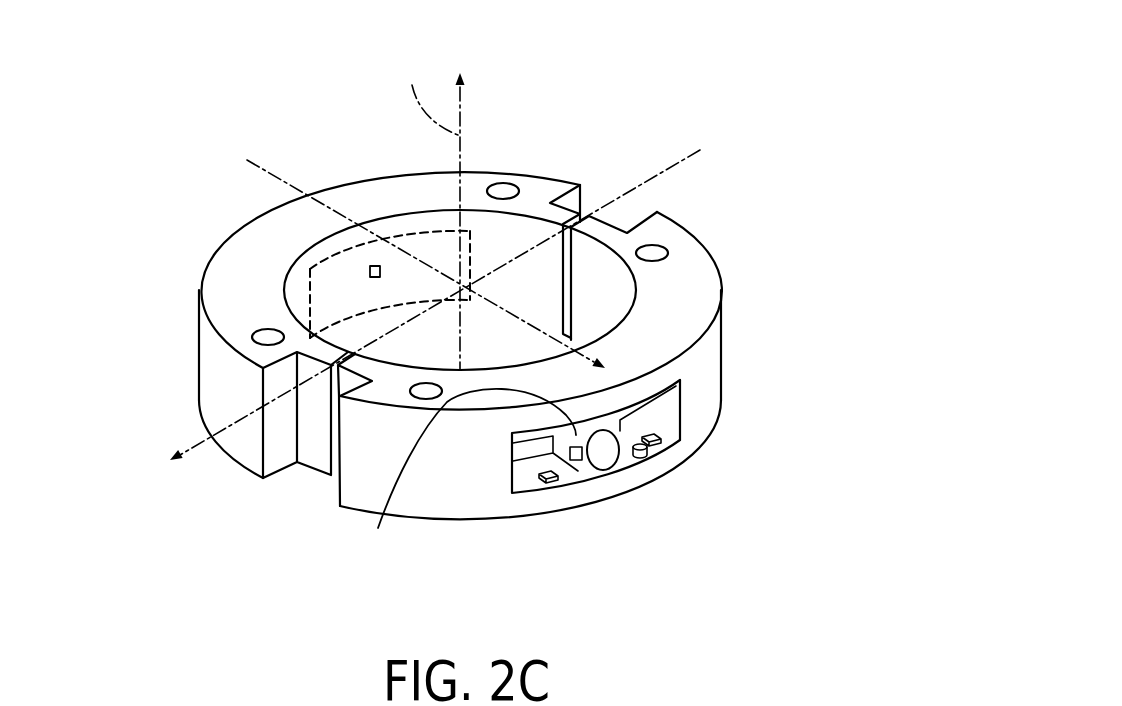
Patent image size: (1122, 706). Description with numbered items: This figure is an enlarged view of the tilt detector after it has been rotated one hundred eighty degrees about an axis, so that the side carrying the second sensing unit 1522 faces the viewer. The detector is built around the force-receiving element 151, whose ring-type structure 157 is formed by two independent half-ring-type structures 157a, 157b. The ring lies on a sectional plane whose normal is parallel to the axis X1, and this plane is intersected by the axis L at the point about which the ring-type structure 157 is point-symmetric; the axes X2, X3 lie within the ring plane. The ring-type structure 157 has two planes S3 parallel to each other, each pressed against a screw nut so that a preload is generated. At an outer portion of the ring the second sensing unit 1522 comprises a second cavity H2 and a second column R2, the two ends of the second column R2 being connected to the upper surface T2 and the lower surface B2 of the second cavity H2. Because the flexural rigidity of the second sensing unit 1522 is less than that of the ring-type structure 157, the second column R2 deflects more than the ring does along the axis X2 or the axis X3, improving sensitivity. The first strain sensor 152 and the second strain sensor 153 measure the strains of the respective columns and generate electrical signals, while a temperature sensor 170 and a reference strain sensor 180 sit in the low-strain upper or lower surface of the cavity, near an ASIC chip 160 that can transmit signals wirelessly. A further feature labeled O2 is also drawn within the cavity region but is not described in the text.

The force-receiving element 151 is at (506, 355).
The first strain sensor 152 is at (375, 265).
The second strain sensor 153 is at (379, 528).
The ring-type structure 157 is at (448, 430).
The half-ring-type structure 157a is at (250, 455).
The half-ring-type structure 157b is at (360, 490).
The second sensing unit 1522 is at (445, 425).
The ASIC chip 160 is at (680, 467).
The temperature sensor 170 is at (653, 447).
The reference strain sensor 180 is at (562, 490).
The axis X1 is at (459, 199).
The axis X2 is at (452, 287).
The axis X3 is at (410, 246).
The axis L is at (430, 90).
The second cavity H2 is at (336, 321).
The second column R2 is at (613, 408).
The plane S3 is at (687, 300).
The upper surface T2 is at (527, 443).
The lower surface B2 is at (602, 449).
The element O2 is at (642, 460).